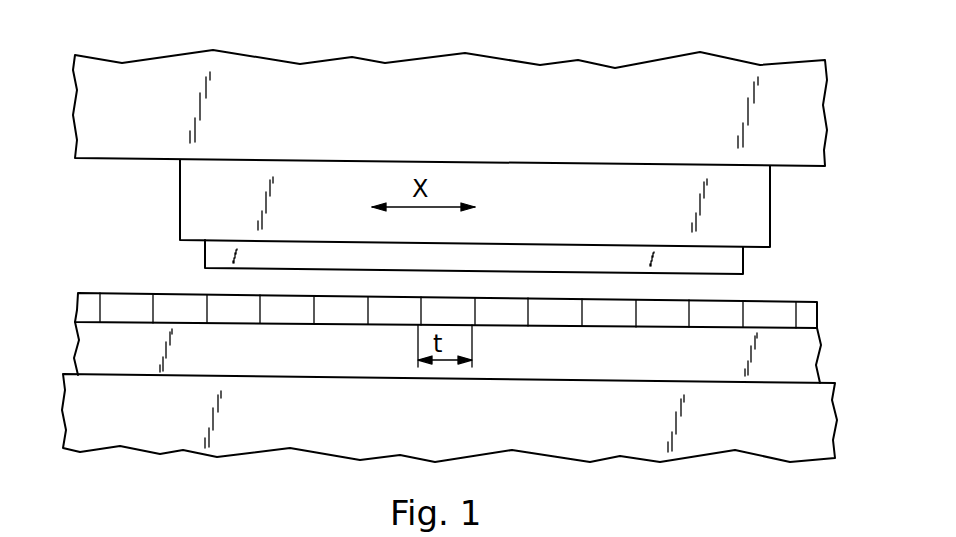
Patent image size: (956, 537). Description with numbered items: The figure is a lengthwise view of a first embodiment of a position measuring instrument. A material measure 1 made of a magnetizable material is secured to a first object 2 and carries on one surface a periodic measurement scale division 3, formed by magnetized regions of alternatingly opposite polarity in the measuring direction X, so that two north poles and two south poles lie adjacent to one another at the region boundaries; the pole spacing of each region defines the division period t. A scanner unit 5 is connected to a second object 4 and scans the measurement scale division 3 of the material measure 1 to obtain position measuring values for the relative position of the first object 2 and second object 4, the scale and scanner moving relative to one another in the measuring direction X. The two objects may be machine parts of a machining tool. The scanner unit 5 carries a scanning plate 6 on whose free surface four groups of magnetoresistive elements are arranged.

The material measure 1 is at (810, 357).
The first object 2 is at (806, 450).
The measurement scale division 3 is at (816, 313).
The second object 4 is at (726, 66).
The scanner unit 5 is at (768, 206).
The scanning plate 6 is at (742, 266).